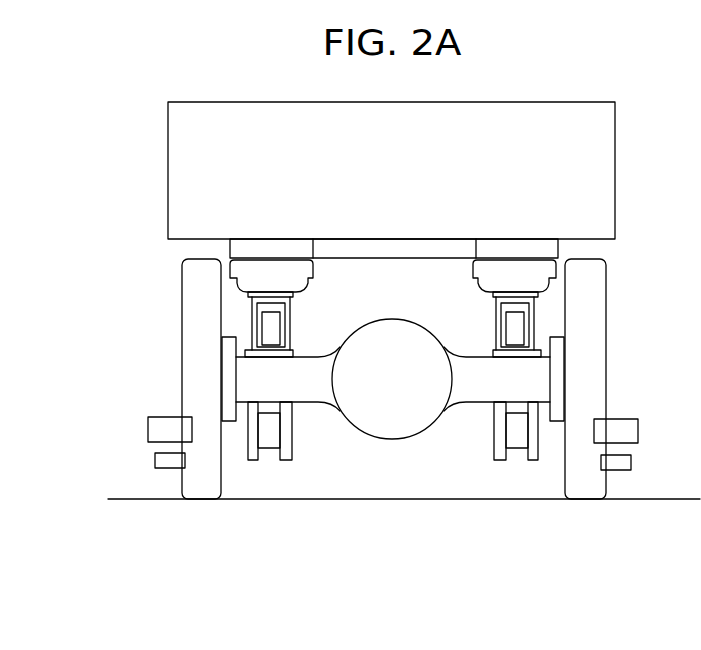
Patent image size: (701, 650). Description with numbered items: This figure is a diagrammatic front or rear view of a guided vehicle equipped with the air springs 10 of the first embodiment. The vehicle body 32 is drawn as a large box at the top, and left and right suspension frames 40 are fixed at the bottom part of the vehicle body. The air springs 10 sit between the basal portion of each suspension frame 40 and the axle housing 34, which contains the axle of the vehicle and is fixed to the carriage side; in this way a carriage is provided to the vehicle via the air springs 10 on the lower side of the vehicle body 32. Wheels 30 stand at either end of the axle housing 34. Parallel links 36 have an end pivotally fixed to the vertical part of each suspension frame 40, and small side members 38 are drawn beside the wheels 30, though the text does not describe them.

The air spring 10 is at (242, 270).
The wheels 30 is at (200, 326).
The vehicle body 32 is at (592, 124).
The axle housing 34 is at (407, 418).
The parallel links 36 is at (272, 450).
The side device 38 is at (147, 425).
The suspension frames 40 is at (542, 240).